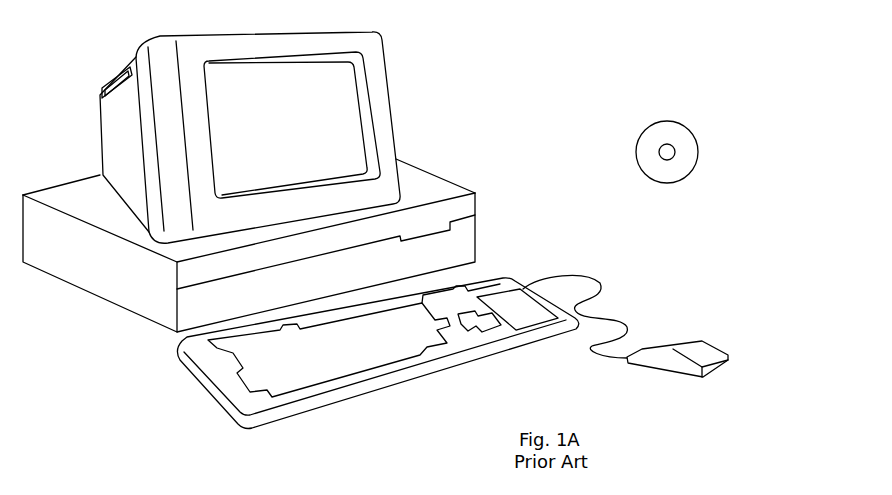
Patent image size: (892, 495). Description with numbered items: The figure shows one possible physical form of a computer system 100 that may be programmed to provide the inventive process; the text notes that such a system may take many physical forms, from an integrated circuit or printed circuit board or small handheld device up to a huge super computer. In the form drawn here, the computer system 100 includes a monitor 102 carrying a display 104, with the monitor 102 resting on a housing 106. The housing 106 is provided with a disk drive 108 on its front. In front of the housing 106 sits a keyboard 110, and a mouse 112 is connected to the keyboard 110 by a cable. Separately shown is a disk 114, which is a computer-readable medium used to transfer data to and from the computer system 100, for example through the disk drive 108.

The computer system 100 is at (590, 40).
The monitor 102 is at (393, 137).
The display 104 is at (355, 92).
The housing 106 is at (145, 316).
The disk drive 108 is at (450, 222).
The keyboard 110 is at (385, 387).
The mouse 112 is at (712, 349).
The disk 114 is at (683, 122).